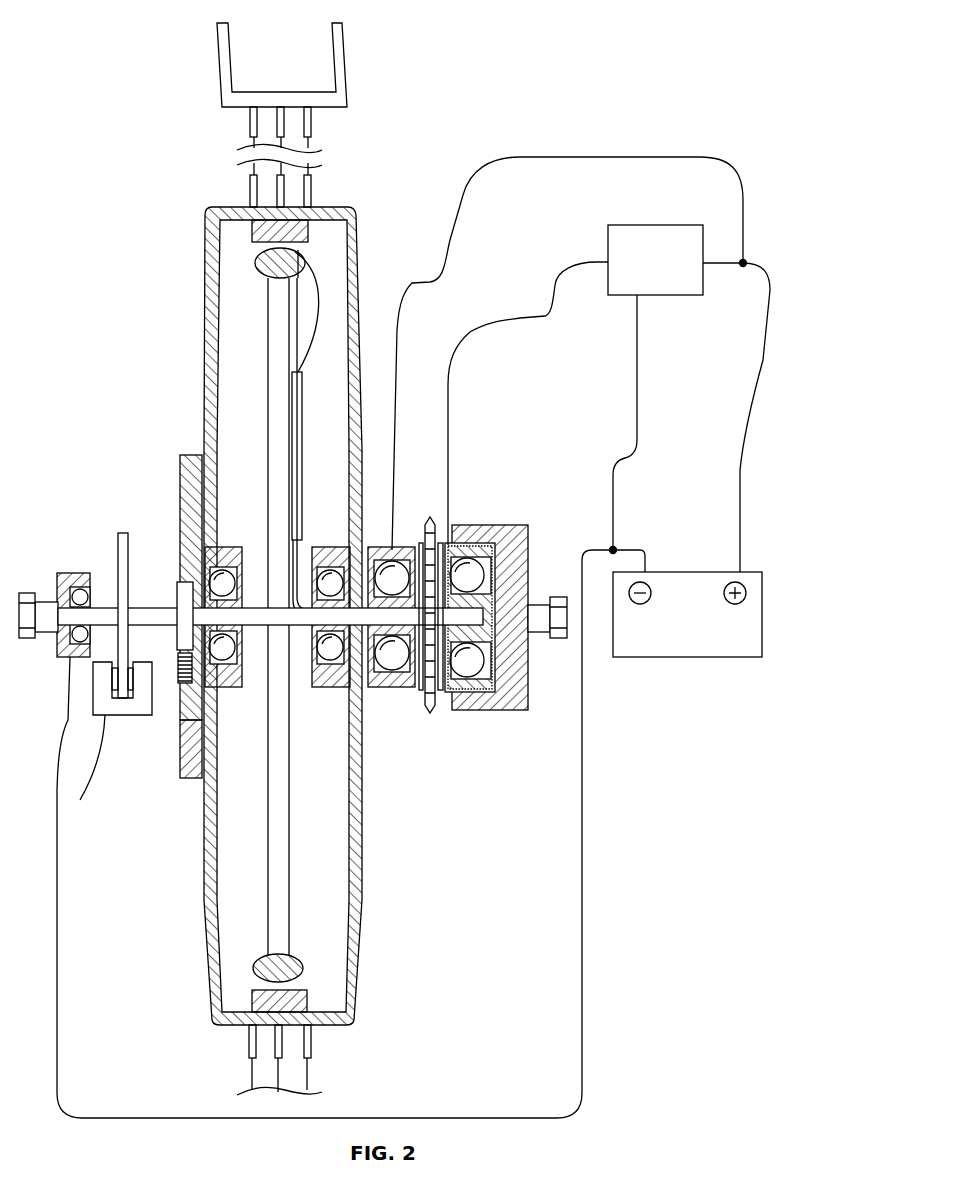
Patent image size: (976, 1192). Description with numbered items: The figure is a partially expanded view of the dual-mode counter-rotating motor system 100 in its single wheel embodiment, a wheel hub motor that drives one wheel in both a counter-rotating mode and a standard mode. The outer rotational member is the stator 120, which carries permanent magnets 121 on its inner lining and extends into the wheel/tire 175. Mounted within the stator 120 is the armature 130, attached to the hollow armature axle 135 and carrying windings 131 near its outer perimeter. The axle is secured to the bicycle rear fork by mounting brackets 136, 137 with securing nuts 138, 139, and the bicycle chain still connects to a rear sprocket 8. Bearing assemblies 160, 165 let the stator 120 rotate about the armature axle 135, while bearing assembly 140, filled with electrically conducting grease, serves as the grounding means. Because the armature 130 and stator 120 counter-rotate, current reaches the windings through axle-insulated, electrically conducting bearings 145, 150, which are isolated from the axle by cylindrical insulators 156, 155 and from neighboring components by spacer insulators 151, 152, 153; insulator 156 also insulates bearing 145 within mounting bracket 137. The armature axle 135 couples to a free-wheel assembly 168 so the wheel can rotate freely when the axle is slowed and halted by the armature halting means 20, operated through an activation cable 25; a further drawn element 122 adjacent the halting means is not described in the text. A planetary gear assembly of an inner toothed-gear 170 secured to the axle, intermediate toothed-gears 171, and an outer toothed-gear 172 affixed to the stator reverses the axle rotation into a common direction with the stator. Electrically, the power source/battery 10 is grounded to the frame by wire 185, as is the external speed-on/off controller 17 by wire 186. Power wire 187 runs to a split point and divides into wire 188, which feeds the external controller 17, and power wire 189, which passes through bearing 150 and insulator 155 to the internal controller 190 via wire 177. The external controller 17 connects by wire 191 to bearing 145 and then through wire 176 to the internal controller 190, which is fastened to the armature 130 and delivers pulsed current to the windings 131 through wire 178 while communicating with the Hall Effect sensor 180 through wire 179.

The dual-mode counter-rotating motor system 100 is at (116, 44).
The rear sprocket 8 is at (428, 715).
The power source/battery 10 is at (668, 572).
The external speed-on/off controller 17 is at (625, 225).
The armature reversible halting means 20 is at (100, 680).
The armature halting activation cable 25 is at (80, 790).
The stator 120 is at (208, 372).
The permanent magnets 121 is at (252, 232).
The lever rod 122 is at (122, 533).
The armature 130 is at (268, 378).
The windings 131 is at (260, 268).
The armature axle 135 is at (103, 605).
The axle-to-bike mounting bracket 136 is at (50, 630).
The axle-to-bike mounting bracket 137 is at (533, 633).
The securing nut 138 is at (27, 593).
The securing nut 139 is at (556, 597).
The bearing assembly 140 is at (80, 575).
The bearing assembly 145 is at (467, 665).
The bearing assembly 150 is at (393, 670).
The spacer insulator 151 is at (370, 545).
The spacer insulator 152 is at (420, 690).
The spacer insulator 153 is at (440, 690).
The axle surrounding insulator 155 is at (388, 600).
The axle surrounding insulator 156 is at (517, 525).
The bearing assembly 160 is at (228, 650).
The bearing assembly 165 is at (332, 660).
The free-wheel assembly 168 is at (177, 602).
The inner toothed-gear 170 is at (186, 578).
The intermediate toothed-gears 171 is at (180, 685).
The outer toothed-gear 172 is at (190, 775).
The wheel/tire 175 is at (238, 107).
The wire 176 is at (290, 540).
The wire 177 is at (328, 460).
The wire 178 is at (300, 255).
The wire 179 is at (300, 325).
The Hall Effect sensor 180 is at (340, 245).
The wire 185 is at (628, 548).
The wire 186 is at (637, 400).
The power wire 187 is at (765, 288).
The wire 188 is at (718, 262).
The power wire 189 is at (555, 157).
The internal controller 190 is at (305, 400).
The wire 191 is at (585, 262).